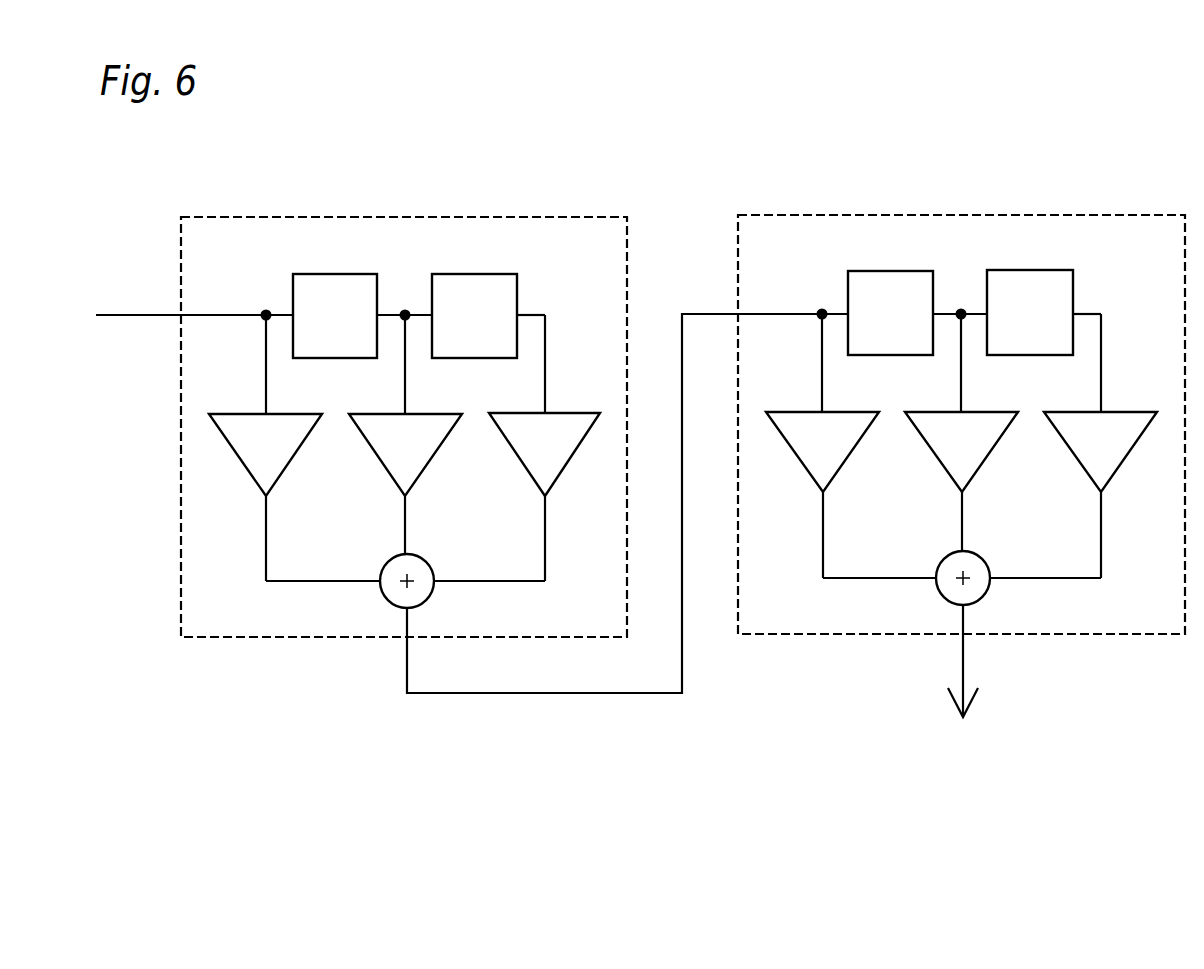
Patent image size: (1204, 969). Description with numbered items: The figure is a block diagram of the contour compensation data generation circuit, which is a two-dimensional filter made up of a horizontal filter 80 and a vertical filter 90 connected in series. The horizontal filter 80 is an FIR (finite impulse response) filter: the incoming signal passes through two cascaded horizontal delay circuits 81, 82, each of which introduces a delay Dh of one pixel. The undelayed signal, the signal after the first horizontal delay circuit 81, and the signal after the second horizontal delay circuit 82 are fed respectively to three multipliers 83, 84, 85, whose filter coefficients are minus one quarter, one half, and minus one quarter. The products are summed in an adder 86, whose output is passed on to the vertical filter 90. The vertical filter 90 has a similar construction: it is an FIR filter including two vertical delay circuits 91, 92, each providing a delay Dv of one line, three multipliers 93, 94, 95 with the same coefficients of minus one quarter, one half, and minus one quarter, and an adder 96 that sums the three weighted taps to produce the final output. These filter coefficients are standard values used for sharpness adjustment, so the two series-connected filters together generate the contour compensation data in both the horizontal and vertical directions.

The horizontal filter 80 is at (405, 216).
The horizontal delay circuit 81 is at (335, 273).
The horizontal delay circuit 82 is at (475, 273).
The multiplier 83 is at (237, 457).
The multiplier 84 is at (376, 457).
The multiplier 85 is at (516, 457).
The adder 86 is at (435, 594).
The vertical filter 90 is at (962, 214).
The vertical delay circuit 91 is at (890, 270).
The vertical delay circuit 92 is at (1032, 270).
The multiplier 93 is at (794, 455).
The multiplier 94 is at (932, 455).
The multiplier 95 is at (1072, 455).
The adder 96 is at (991, 591).